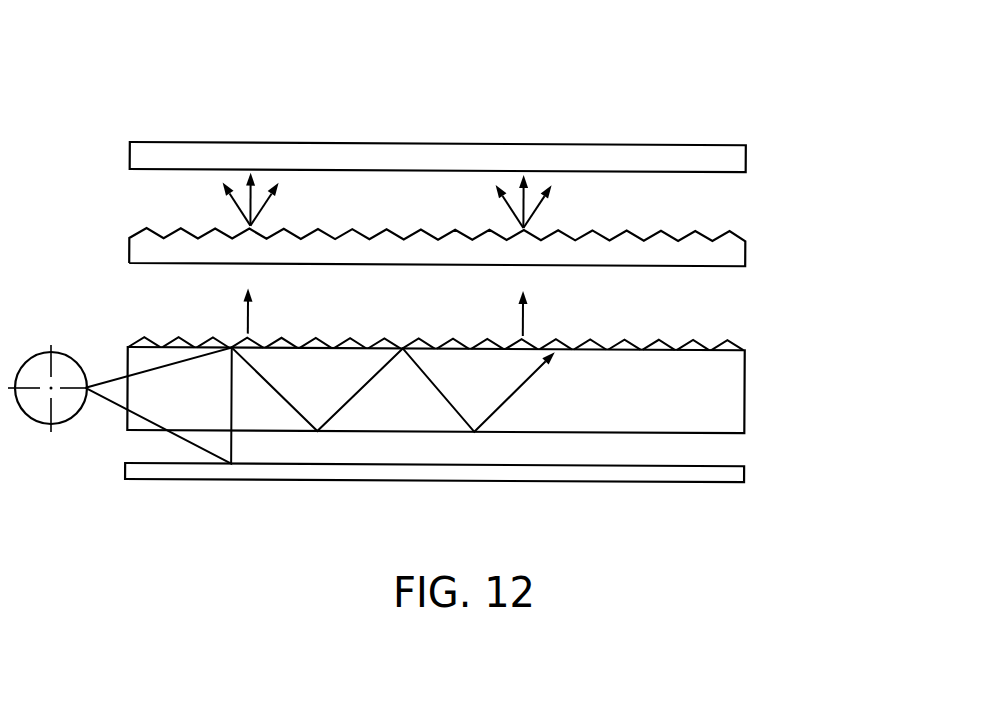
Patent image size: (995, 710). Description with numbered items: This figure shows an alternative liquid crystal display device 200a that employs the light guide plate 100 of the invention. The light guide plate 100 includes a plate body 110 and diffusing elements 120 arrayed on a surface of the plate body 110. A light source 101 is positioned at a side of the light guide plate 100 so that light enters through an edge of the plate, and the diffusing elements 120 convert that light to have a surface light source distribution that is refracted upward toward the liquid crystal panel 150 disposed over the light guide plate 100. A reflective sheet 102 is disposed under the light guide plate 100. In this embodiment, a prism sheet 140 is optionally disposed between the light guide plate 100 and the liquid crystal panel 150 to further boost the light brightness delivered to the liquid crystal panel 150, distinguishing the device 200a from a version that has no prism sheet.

The liquid crystal display device 200a is at (818, 30).
The liquid crystal panel 150 is at (743, 158).
The prism sheet 140 is at (743, 245).
The diffusing elements 120 is at (668, 345).
The plate body 110 is at (745, 387).
The light guide plate 100 is at (497, 377).
The reflective sheet 102 is at (745, 473).
The light source 101 is at (35, 352).